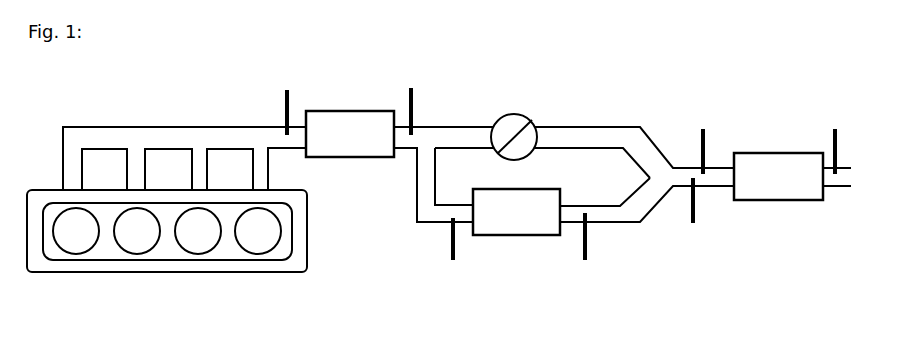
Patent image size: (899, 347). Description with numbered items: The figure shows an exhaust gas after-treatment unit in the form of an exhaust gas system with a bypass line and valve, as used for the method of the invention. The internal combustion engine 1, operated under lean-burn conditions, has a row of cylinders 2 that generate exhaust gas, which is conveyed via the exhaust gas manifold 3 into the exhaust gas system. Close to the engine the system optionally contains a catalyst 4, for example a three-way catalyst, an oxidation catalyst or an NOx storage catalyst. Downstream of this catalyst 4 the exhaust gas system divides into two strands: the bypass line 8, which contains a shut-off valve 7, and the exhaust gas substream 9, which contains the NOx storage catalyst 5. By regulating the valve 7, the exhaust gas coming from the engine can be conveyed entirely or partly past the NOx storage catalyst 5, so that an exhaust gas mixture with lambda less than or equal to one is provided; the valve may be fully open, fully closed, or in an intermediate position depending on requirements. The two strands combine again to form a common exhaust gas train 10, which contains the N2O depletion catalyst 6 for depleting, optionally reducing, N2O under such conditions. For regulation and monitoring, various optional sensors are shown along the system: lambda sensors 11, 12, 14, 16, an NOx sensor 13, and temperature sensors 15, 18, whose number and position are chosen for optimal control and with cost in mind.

The internal combustion engine 1 is at (203, 253).
The row of cylinders 2 is at (167, 265).
The exhaust gas manifold 3 is at (184, 140).
The catalyst close to the engine 4 is at (350, 134).
The NOx storage catalyst 5 is at (516, 212).
The N2O depletion catalyst 6 is at (778, 176).
The valve for opening or closing the bypass line 7 is at (525, 103).
The bypass line 8 is at (634, 124).
The exhaust gas substream with NOx storage catalyst 9 is at (647, 232).
The common exhaust gas train 10 is at (703, 123).
The lambda sensor 11 is at (317, 91).
The lambda sensor 12 is at (442, 91).
The NOx sensor 13 is at (544, 249).
The lambda sensor 14 is at (734, 128).
The temperature sensor 15 is at (728, 222).
The lambda sensor 16 is at (855, 127).
The temperature sensor 18 is at (484, 268).